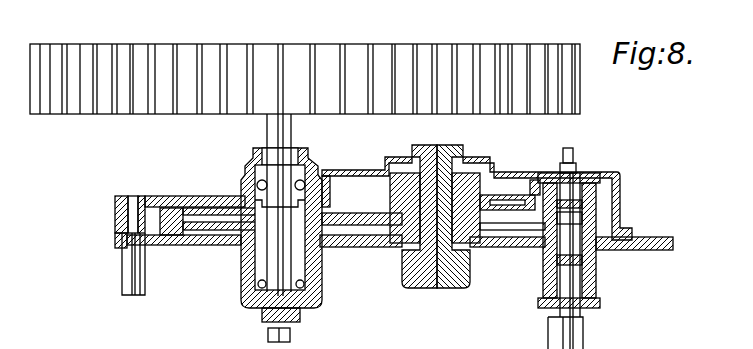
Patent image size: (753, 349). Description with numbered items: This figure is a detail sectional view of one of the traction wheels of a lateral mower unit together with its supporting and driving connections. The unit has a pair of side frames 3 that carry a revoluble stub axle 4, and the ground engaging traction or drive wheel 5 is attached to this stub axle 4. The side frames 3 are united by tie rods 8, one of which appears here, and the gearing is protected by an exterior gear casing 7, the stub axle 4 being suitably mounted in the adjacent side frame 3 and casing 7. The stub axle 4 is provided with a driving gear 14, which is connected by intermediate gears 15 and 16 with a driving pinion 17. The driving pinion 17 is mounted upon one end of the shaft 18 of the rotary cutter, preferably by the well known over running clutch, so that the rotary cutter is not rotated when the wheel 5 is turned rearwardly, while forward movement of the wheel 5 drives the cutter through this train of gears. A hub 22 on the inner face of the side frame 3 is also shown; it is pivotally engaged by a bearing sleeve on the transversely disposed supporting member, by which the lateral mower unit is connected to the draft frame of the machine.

The side frame 3 is at (353, 246).
The stub axle 4 is at (278, 126).
The traction wheel 5 is at (263, 50).
The gear casing 7 is at (348, 170).
The tie rod 8 is at (130, 268).
The driving gear 14 is at (207, 215).
The intermediate gear 15 is at (476, 240).
The intermediate gear 16 is at (505, 195).
The driving pinion 17 is at (600, 186).
The shaft 18 is at (583, 340).
The hub 22 is at (318, 283).